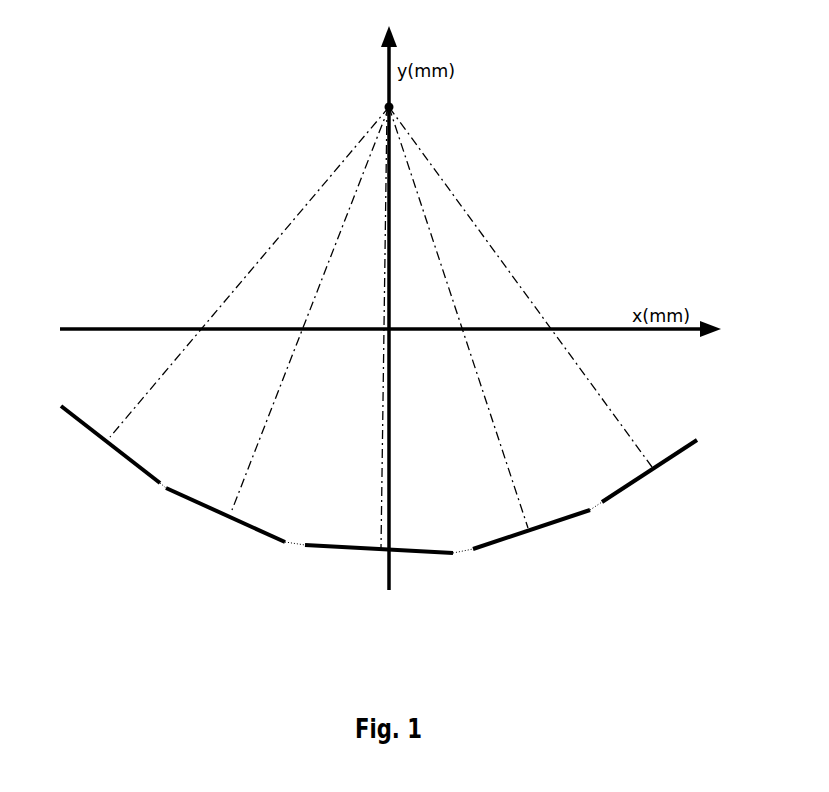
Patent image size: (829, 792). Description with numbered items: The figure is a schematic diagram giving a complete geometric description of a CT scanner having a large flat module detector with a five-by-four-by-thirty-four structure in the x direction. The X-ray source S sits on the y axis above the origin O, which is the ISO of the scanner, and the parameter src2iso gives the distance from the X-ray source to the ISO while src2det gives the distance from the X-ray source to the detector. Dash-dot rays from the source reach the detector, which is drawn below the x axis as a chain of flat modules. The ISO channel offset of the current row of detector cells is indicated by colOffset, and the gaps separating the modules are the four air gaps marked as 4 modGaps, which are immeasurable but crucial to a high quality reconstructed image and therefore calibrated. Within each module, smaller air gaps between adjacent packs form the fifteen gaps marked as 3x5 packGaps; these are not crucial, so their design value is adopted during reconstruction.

The X-ray source S is at (422, 103).
The ISO O is at (401, 341).
The distance from the X-ray source to the ISO src2iso is at (400, 327).
The distance from the X-ray source to the detector src2det is at (468, 317).
The ISO channel offset colOffset is at (382, 547).
The air gaps between adjacent modules 4 modGaps is at (597, 506).
The air gaps between adjacent packs 3x5 packGaps is at (675, 457).